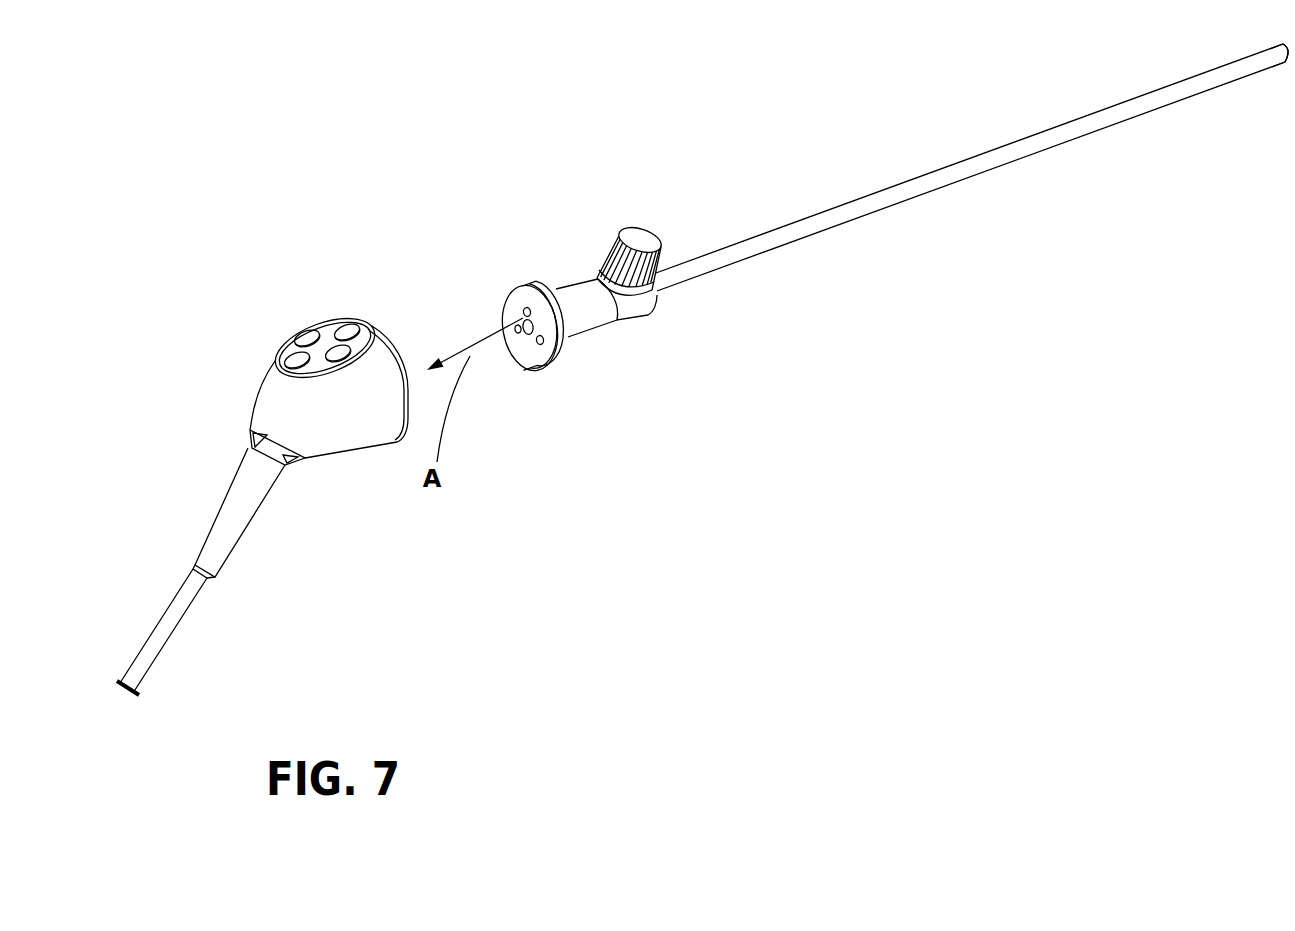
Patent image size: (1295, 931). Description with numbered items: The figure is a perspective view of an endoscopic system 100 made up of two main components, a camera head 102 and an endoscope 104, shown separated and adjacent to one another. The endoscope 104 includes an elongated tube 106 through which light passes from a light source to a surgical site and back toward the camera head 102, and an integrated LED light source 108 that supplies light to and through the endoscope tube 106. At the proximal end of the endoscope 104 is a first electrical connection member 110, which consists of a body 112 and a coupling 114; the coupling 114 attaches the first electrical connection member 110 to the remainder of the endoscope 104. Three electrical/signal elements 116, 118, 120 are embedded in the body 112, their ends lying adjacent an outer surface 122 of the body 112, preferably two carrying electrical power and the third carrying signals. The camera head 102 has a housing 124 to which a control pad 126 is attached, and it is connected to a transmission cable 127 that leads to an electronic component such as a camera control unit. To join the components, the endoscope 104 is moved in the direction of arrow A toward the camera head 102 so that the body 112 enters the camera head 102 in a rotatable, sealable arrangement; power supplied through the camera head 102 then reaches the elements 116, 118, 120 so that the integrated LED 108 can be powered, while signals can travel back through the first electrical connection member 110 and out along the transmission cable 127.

The endoscopic system 100 is at (266, 256).
The camera head 102 is at (337, 441).
The endoscope 104 is at (787, 214).
The elongated tube 106 is at (1022, 147).
The integrated LED light source 108 is at (631, 230).
The first electrical connection member 110 is at (591, 336).
The body 112 is at (504, 284).
The coupling 114 is at (577, 302).
The electrical/signal element 116 is at (519, 346).
The electrical/signal element 118 is at (523, 316).
The electrical/signal element 120 is at (540, 352).
The outer surface 122 is at (505, 322).
The housing 124 is at (272, 396).
The control pad 126 is at (327, 322).
The transmission cable 127 is at (180, 618).